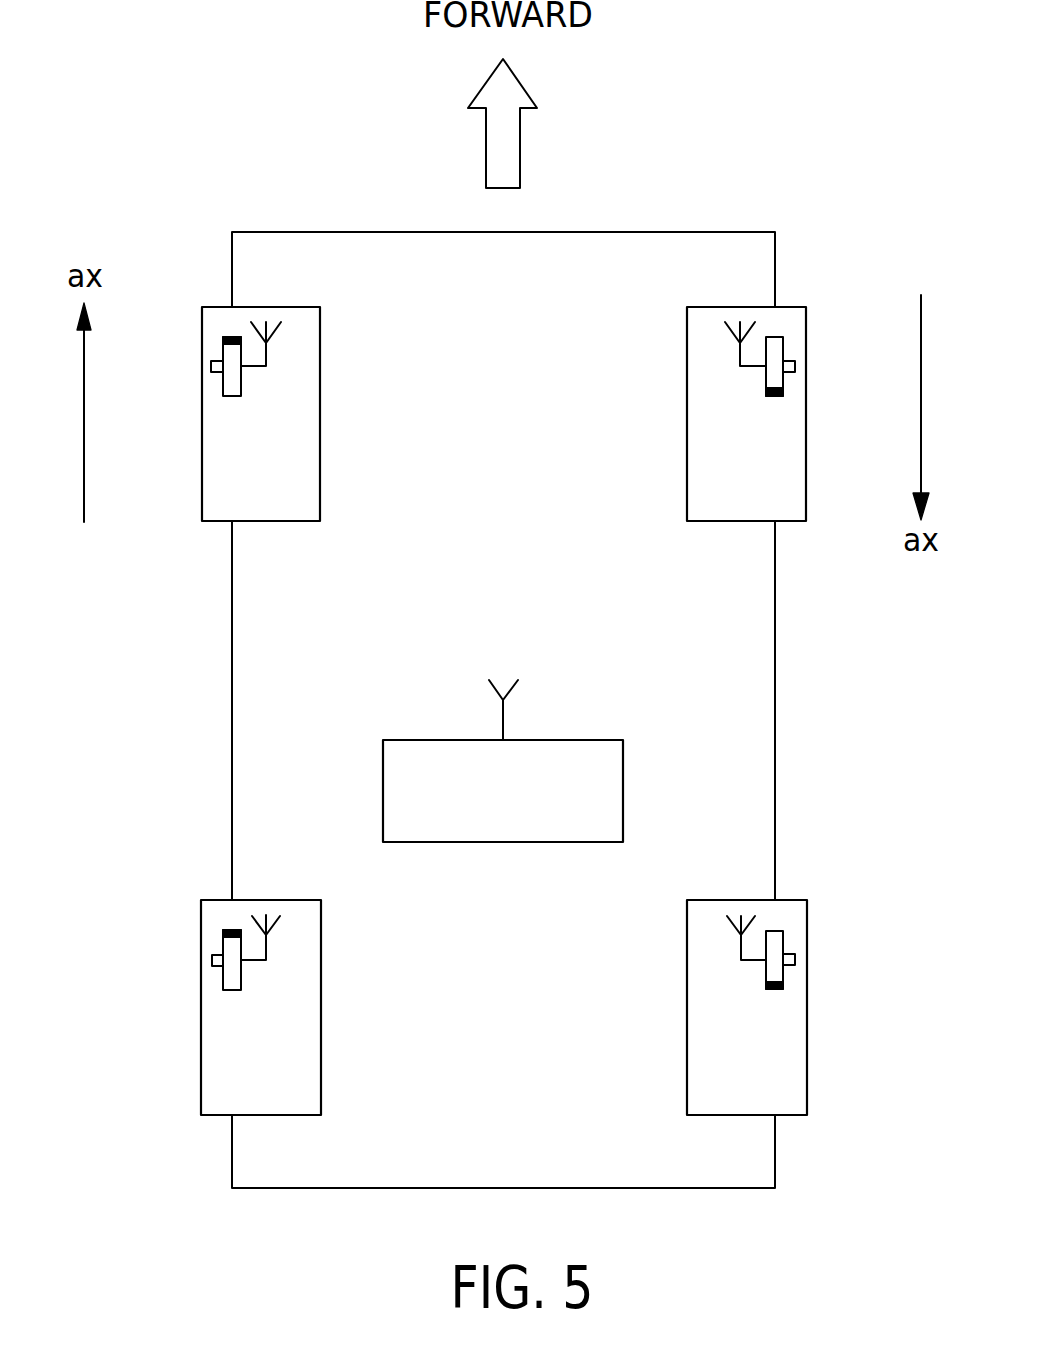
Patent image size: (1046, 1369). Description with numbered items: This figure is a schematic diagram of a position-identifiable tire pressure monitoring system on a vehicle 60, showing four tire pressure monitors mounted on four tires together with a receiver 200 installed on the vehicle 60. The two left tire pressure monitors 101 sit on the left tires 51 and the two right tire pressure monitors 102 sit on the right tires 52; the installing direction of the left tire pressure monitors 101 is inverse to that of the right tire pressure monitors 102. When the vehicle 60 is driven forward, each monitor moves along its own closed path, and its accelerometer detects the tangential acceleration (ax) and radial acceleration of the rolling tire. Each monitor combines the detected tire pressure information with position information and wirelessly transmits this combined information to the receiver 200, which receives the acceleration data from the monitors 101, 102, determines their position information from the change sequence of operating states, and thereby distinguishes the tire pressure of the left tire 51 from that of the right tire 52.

The left tire 51 is at (297, 443).
The right tire 52 is at (713, 443).
The vehicle 60 is at (738, 655).
The left tire pressure monitor 101 is at (232, 396).
The right tire pressure monitor 102 is at (775, 337).
The receiver 200 is at (498, 842).